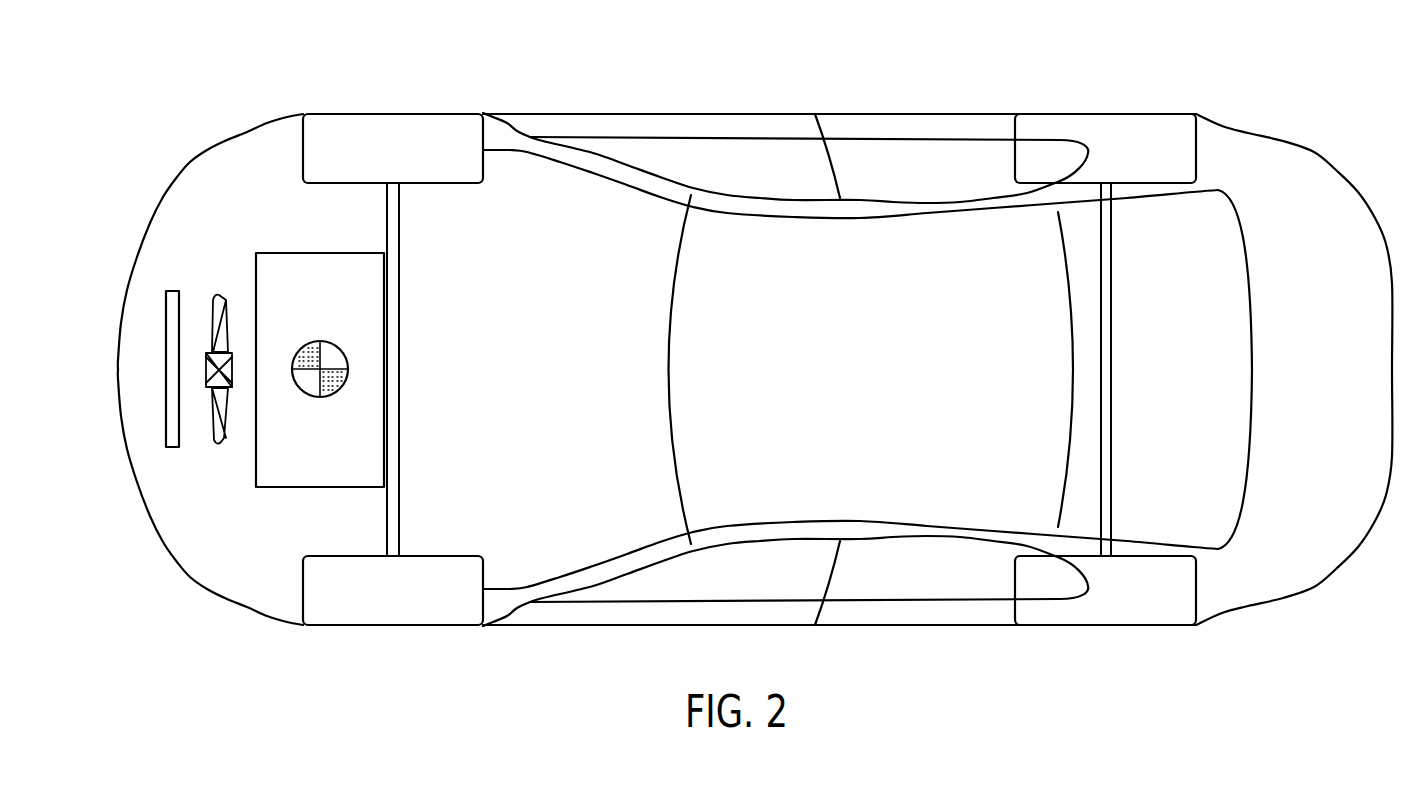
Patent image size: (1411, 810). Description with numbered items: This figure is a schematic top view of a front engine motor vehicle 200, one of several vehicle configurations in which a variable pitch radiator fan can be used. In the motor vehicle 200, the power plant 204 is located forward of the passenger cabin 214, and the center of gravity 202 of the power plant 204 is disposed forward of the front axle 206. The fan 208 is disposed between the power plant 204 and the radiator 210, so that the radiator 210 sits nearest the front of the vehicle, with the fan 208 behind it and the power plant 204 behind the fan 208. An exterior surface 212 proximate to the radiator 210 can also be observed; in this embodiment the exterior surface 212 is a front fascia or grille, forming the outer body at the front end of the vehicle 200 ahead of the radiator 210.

The front engine motor vehicle 200 is at (847, 95).
The center of gravity 202 is at (311, 396).
The power plant 204 is at (293, 252).
The front axle 206 is at (387, 503).
The fan 208 is at (218, 443).
The radiator 210 is at (175, 290).
The exterior surface 212 is at (118, 370).
The passenger cabin 214 is at (892, 374).